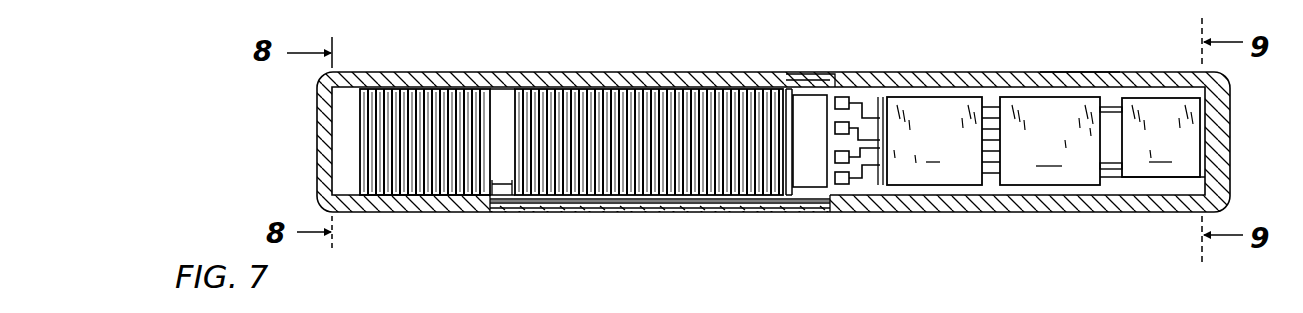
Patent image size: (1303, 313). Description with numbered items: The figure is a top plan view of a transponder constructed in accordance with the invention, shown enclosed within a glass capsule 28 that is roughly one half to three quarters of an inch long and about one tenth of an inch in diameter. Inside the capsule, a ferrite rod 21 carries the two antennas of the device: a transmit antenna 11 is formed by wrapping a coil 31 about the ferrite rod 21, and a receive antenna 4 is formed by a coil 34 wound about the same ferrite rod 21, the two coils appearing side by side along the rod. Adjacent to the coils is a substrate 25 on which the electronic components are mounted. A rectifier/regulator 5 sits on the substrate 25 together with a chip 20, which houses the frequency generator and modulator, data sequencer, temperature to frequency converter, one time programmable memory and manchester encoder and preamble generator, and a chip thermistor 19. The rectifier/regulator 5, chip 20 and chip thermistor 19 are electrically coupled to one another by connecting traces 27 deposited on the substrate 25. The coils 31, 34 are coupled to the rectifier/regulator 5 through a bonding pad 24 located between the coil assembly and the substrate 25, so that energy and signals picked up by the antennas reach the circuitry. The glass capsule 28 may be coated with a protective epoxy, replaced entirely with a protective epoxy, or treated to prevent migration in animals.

The receive antenna 4 is at (707, 208).
The rectifier/regulator 5 is at (934, 141).
The transmit antenna 11 is at (445, 199).
The chip thermistor 19 is at (1161, 137).
The chip 20 is at (1050, 141).
The ferrite rod 21 is at (340, 137).
The bonding pad 24 is at (845, 100).
The substrate 25 is at (1112, 182).
The connecting traces 27 is at (1112, 107).
The glass capsule 28 is at (1079, 76).
The coil 31 is at (420, 115).
The coil 34 is at (610, 103).